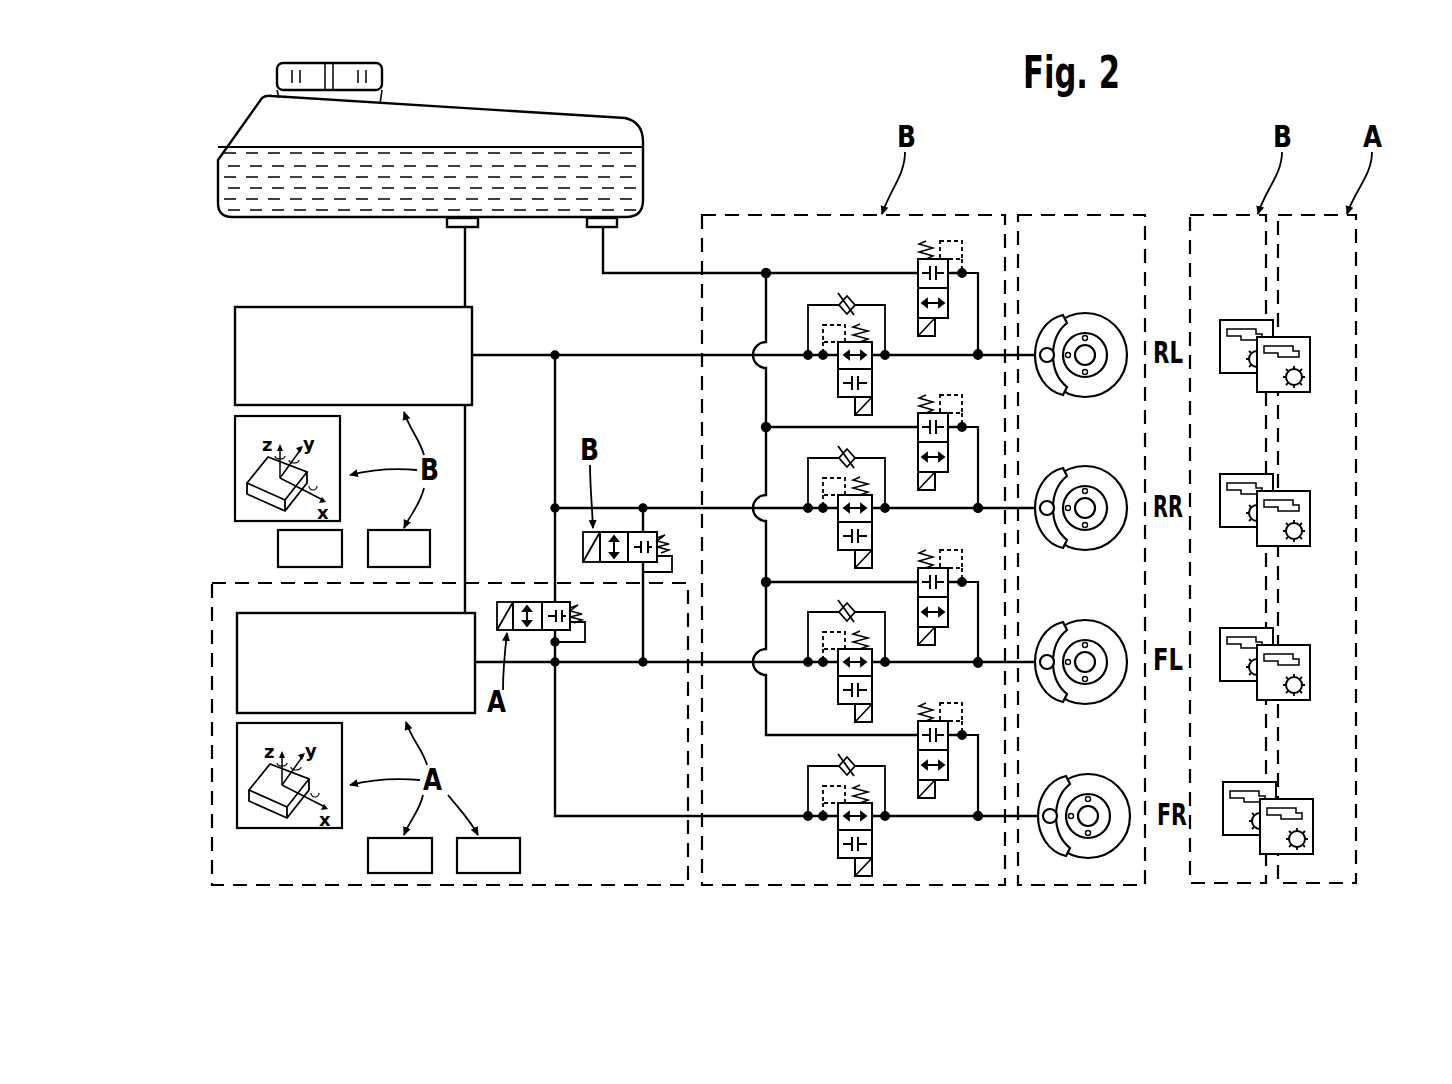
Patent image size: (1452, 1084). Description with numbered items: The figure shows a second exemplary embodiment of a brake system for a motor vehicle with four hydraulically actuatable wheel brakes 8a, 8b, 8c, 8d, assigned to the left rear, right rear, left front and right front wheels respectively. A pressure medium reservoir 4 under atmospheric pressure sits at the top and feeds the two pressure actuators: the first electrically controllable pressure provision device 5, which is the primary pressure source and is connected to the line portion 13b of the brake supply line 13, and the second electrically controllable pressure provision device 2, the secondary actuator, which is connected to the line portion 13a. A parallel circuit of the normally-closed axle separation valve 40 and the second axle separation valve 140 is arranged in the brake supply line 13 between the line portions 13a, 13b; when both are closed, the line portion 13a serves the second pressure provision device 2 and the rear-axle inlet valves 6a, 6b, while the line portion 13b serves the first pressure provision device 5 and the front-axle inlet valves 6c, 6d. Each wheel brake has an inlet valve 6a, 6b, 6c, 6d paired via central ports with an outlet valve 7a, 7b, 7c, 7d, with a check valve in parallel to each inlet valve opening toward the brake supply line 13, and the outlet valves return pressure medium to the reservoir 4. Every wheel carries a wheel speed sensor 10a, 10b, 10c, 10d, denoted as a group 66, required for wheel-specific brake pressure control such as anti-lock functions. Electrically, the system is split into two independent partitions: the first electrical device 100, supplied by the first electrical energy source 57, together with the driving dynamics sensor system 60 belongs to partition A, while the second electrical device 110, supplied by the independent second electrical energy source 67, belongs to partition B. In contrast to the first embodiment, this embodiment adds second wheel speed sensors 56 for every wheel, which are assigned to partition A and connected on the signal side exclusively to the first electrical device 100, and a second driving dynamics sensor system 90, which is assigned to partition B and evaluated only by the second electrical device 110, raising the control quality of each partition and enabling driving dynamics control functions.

The pressure medium reservoir 4 is at (532, 130).
The second electrically controllable pressure provision device 2 is at (232, 372).
The first electrically controllable pressure provision device 5 is at (234, 678).
The brake supply line 13 is at (548, 450).
The first line portion 13a is at (537, 352).
The second line portion 13b is at (524, 666).
The axle separation valve 40 is at (537, 600).
The second axle separation valve 140 is at (620, 530).
The second driving dynamics sensor system 90 is at (248, 462).
The driving dynamics sensor system 60 is at (250, 768).
The second electrical device 110 is at (292, 548).
The second electrical energy source 67 is at (420, 548).
The first electrical device 100 is at (402, 856).
The first electrical energy source 57 is at (490, 856).
The inlet valve 6a is at (838, 380).
The inlet valve 6b is at (838, 534).
The inlet valve 6c is at (838, 688).
The inlet valve 6d is at (838, 842).
The outlet valve 7a is at (948, 282).
The outlet valve 7b is at (948, 436).
The outlet valve 7c is at (948, 591).
The outlet valve 7d is at (948, 744).
The wheel brake 8a is at (1050, 336).
The wheel brake 8b is at (1050, 490).
The wheel brake 8c is at (1050, 644).
The wheel brake 8d is at (1052, 798).
The wheel speed sensor 10a is at (1250, 320).
The wheel speed sensor 10b is at (1250, 474).
The wheel speed sensor 10c is at (1250, 628).
The wheel speed sensor 10d is at (1253, 782).
The group of wheel speed sensors 66 is at (1225, 214).
The second wheel speed sensors 56 is at (1328, 253).